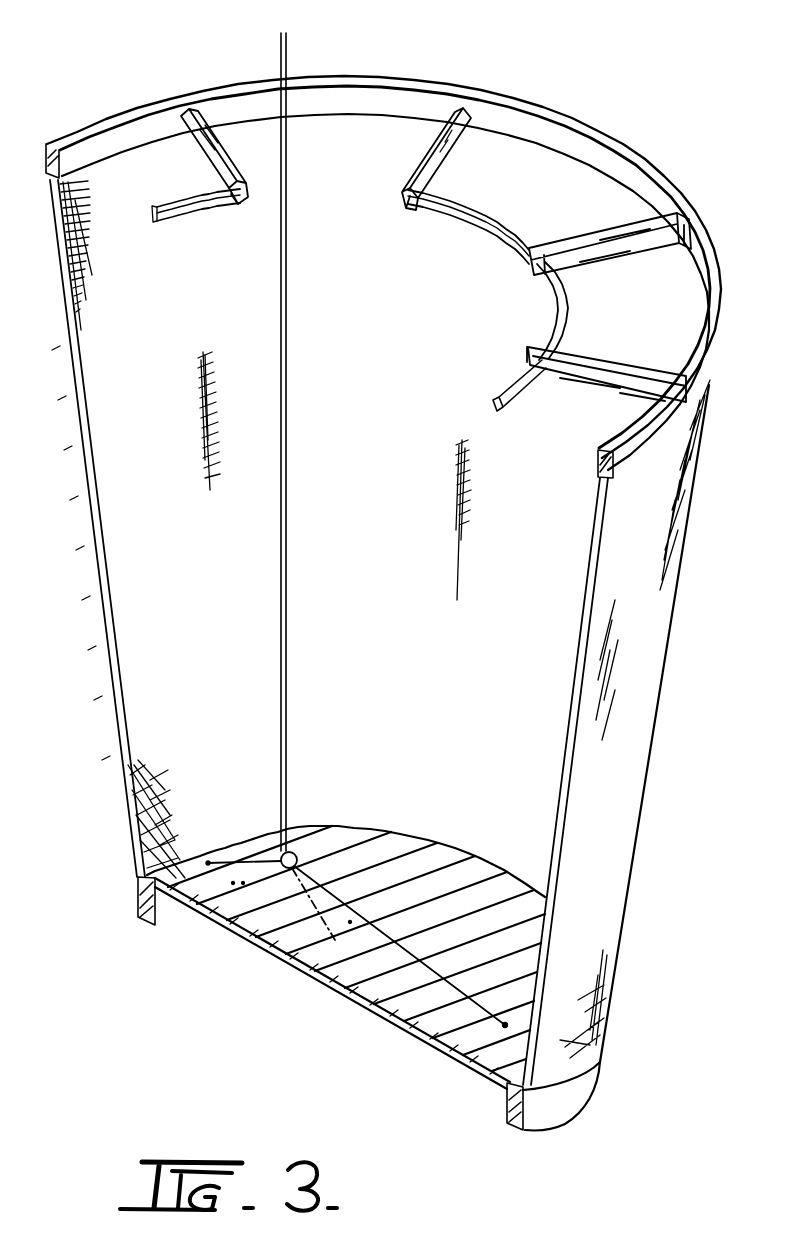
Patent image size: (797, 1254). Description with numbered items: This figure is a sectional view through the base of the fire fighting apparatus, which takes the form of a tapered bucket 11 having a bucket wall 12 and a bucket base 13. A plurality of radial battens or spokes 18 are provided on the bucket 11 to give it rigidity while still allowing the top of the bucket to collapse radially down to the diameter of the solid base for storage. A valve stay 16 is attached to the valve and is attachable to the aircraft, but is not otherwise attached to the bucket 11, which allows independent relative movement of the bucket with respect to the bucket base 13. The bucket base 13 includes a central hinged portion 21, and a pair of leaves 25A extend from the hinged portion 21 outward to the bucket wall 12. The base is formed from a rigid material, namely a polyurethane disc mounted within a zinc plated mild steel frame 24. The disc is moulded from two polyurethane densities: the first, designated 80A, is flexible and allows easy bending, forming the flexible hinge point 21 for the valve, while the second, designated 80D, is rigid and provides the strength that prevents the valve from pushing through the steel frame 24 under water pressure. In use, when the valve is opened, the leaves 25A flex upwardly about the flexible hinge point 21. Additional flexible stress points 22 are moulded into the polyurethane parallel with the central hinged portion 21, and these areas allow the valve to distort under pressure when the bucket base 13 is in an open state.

The tapered bucket 11 is at (537, 90).
The bucket wall 12 is at (622, 826).
The bucket base 13 is at (185, 876).
The valve stay 16 is at (292, 468).
The radial battens or spokes 18 is at (607, 378).
The central hinged portion 21 is at (357, 938).
The flexible stress points 22 is at (510, 897).
The steel frame 24 is at (560, 1094).
The leaves 25A is at (210, 922).
The flexible polyurethane density 80A is at (303, 957).
The rigid polyurethane density 80D is at (243, 893).